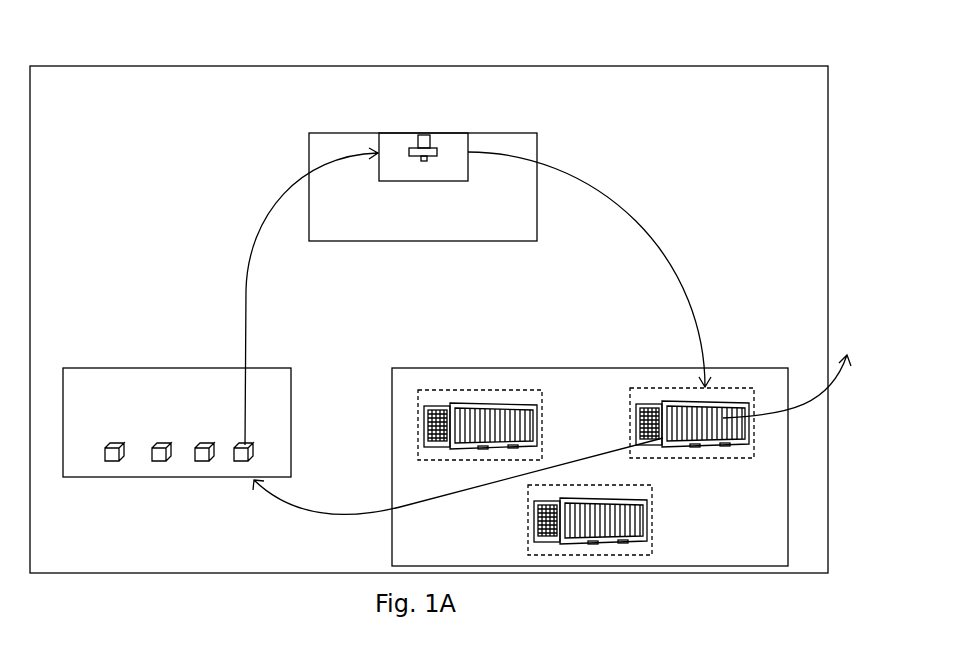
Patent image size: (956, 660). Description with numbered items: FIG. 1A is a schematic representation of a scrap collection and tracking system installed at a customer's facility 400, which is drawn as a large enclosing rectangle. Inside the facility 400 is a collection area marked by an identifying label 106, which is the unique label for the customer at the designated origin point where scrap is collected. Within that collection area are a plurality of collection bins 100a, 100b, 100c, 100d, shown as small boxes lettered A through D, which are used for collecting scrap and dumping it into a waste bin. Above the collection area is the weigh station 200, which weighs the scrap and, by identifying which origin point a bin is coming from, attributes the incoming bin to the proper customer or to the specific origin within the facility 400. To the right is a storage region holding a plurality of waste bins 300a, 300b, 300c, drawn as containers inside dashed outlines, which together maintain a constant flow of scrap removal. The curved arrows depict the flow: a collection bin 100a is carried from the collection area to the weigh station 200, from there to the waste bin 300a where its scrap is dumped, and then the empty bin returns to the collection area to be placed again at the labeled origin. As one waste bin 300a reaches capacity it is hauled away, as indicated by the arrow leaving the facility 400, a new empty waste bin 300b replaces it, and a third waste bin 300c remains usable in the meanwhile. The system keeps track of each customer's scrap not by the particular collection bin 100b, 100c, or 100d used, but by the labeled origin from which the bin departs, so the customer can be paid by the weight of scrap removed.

The facility 400 is at (744, 66).
The weigh station 200 is at (346, 133).
The identifying label 106 is at (277, 467).
The collection bin 100a is at (236, 460).
The collection bin 100b is at (197, 460).
The collection bin 100c is at (154, 460).
The collection bin 100d is at (107, 460).
The waste bin 300a is at (642, 415).
The waste bin 300b is at (628, 542).
The waste bin 300c is at (466, 410).